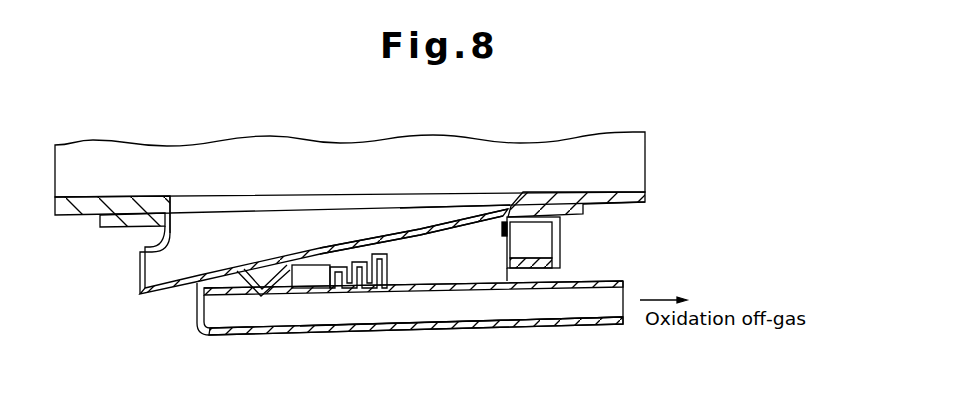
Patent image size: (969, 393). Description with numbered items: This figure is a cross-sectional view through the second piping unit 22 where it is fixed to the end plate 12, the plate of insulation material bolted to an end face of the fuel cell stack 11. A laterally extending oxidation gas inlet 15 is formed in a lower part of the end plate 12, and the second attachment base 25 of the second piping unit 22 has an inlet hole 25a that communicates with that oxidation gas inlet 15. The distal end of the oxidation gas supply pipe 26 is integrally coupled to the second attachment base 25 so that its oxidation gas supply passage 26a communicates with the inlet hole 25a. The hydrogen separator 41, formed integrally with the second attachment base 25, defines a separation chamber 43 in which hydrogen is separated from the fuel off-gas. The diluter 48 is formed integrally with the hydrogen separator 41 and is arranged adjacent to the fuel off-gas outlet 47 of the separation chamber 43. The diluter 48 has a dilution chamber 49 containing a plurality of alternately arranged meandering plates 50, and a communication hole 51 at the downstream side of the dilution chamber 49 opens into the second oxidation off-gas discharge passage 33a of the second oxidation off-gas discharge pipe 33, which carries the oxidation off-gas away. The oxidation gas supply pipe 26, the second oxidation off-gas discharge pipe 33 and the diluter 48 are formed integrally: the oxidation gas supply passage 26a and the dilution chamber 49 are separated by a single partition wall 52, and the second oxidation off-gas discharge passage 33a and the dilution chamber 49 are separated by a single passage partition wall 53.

The fuel cell stack 11 is at (630, 138).
The end plate 12 is at (646, 196).
The oxidation gas inlet 15 is at (279, 206).
The second attachment base 25 is at (583, 208).
The inlet hole 25a is at (447, 212).
The oxidation gas supply pipe 26 is at (153, 296).
The oxidation gas supply passage 26a is at (324, 252).
The partition wall 52 is at (417, 232).
The dilution chamber 49 is at (411, 238).
The meandering plates 50 is at (356, 262).
The communication hole 51 is at (318, 290).
The fuel off-gas outlet 47 is at (501, 233).
The separation chamber 43 is at (544, 238).
The hydrogen separator 41 is at (560, 260).
The second piping unit 22 is at (373, 339).
The passage partition wall 53 is at (461, 290).
The diluter 48 is at (432, 273).
The second oxidation off-gas discharge pipe 33 is at (478, 327).
The second oxidation off-gas discharge passage 33a is at (538, 316).